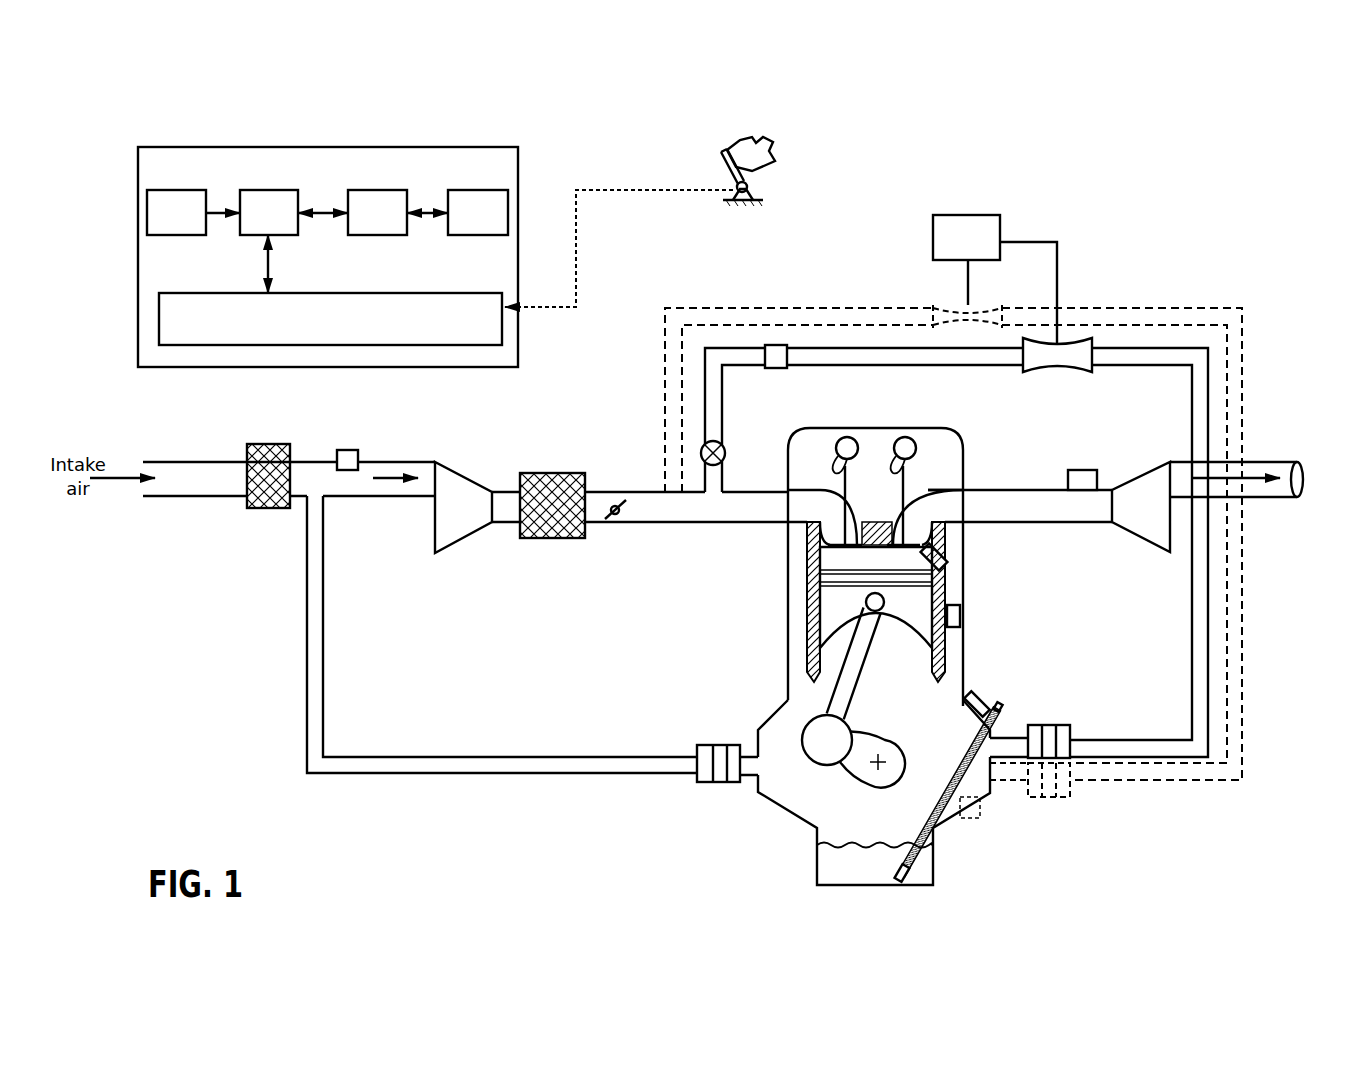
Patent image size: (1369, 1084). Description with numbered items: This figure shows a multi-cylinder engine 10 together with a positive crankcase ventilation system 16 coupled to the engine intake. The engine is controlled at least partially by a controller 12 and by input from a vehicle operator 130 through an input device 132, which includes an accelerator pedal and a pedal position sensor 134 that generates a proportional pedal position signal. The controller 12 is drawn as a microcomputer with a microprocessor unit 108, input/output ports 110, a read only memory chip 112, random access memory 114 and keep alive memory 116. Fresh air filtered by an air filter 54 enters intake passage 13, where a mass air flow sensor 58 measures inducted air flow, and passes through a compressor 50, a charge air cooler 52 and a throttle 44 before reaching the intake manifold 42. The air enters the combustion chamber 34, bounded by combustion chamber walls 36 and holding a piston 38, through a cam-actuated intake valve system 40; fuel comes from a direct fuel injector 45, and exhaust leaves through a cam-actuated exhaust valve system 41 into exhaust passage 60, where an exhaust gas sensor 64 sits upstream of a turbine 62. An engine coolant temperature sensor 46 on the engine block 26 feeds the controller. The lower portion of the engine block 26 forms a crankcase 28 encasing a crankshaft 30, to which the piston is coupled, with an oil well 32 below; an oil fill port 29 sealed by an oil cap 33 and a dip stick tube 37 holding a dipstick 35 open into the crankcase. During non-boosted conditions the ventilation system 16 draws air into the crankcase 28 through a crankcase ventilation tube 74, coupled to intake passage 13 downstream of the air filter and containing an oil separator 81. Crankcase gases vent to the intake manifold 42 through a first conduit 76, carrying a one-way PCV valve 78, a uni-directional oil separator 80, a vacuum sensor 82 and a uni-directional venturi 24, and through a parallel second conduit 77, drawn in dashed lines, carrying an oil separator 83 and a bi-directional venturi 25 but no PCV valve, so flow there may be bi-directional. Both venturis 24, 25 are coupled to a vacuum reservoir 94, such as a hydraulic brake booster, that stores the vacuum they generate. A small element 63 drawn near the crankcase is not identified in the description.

The engine 10 is at (1285, 149).
The controller 12 is at (493, 147).
The intake passage 13 is at (333, 498).
The positive crankcase ventilation system 16 is at (1150, 296).
The first uni-directional venturi 24 is at (1065, 368).
The second bi-directional venturi 25 is at (988, 302).
The engine block 26 is at (993, 858).
The crankcase 28 is at (987, 793).
The oil fill port 29 is at (963, 695).
The crankshaft 30 is at (825, 745).
The oil well 32 is at (873, 865).
The oil cap 33 is at (978, 692).
The combustion chamber 34 is at (828, 555).
The dipstick 35 is at (999, 712).
The combustion chamber walls 36 is at (943, 583).
The dip stick tube 37 is at (967, 752).
The piston 38 is at (832, 603).
The intake valve system 40 is at (850, 492).
The exhaust valve system 41 is at (905, 492).
The intake manifold 42 is at (737, 490).
The throttle 44 is at (617, 517).
The fuel injector 45 is at (950, 547).
The engine coolant temperature sensor 46 is at (958, 618).
The compressor 50 is at (463, 507).
The charge air cooler 52 is at (547, 473).
The air filter 54 is at (264, 443).
The mass air flow sensor 58 is at (347, 450).
The exhaust passage 60 is at (995, 489).
The turbine 62 is at (1231, 505).
The crankcase vent valve 63 is at (973, 820).
The exhaust gas sensor 64 is at (1100, 470).
The crankcase ventilation tube 74 is at (575, 773).
The first conduit 76 is at (883, 367).
The second conduit 77 is at (857, 306).
The PCV valve 78 is at (725, 446).
The oil separator 80 is at (1042, 725).
The oil separator 81 is at (710, 745).
The vacuum sensor 82 is at (776, 369).
The oil separator 83 is at (1042, 797).
The vacuum reservoir 94 is at (995, 280).
The microprocessor unit 108 is at (275, 190).
The input/output ports 110 is at (168, 293).
The read only memory chip 112 is at (183, 190).
The random access memory 114 is at (378, 190).
The keep alive memory 116 is at (478, 190).
The vehicle operator 130 is at (768, 152).
The input device 132 is at (723, 165).
The pedal position sensor 134 is at (757, 185).